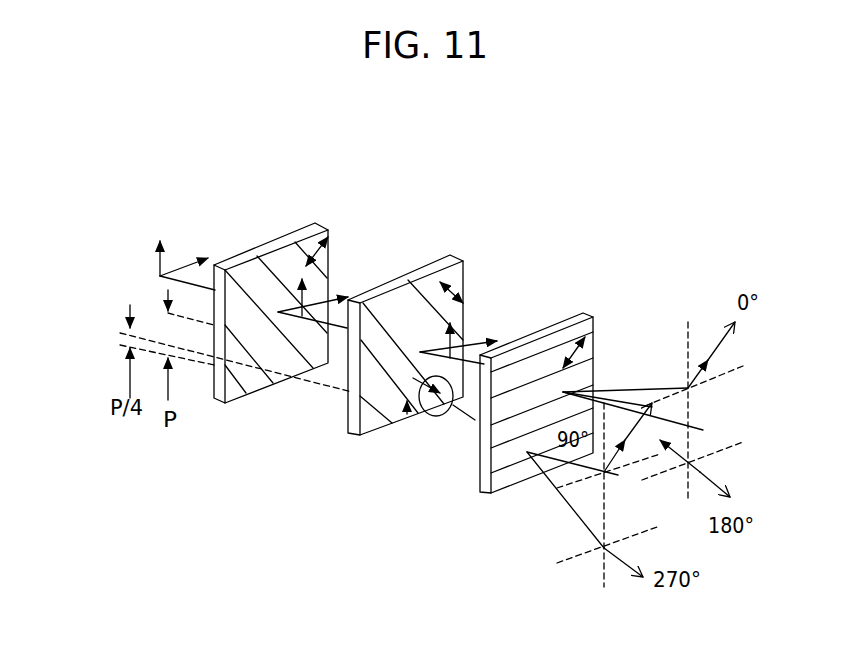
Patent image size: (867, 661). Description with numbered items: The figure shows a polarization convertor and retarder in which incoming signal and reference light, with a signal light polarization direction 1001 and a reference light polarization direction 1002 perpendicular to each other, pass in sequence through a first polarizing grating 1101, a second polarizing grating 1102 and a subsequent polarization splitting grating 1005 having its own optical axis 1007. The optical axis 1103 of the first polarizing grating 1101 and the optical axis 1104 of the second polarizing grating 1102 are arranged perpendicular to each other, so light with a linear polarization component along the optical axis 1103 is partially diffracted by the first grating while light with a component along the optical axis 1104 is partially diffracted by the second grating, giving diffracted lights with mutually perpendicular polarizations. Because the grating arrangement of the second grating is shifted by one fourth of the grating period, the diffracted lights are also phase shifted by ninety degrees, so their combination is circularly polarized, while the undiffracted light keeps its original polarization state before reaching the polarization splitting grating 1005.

The signal light polarization direction 1001 is at (160, 261).
The reference light polarization direction 1002 is at (188, 267).
The first polarizing grating 1101 is at (214, 400).
The second polarizing grating 1102 is at (349, 433).
The optical axis 1103 is at (305, 224).
The optical axis 1104 is at (467, 279).
The polarization splitting grating 1005 is at (480, 490).
The optical axis 1007 is at (566, 345).